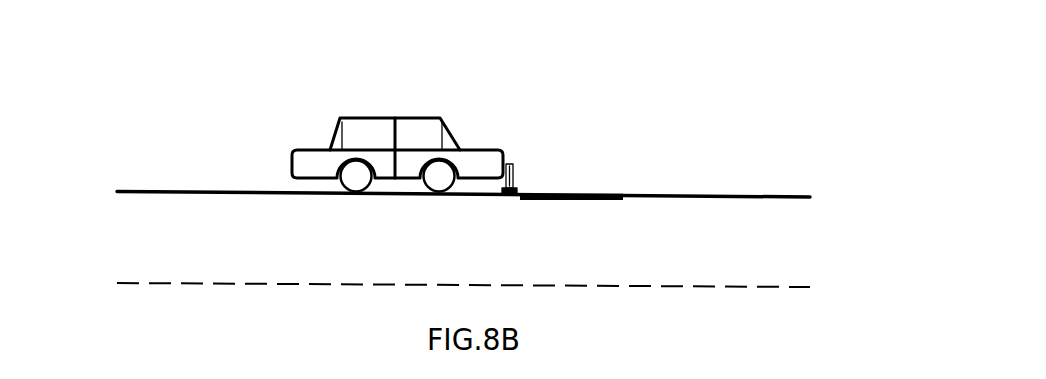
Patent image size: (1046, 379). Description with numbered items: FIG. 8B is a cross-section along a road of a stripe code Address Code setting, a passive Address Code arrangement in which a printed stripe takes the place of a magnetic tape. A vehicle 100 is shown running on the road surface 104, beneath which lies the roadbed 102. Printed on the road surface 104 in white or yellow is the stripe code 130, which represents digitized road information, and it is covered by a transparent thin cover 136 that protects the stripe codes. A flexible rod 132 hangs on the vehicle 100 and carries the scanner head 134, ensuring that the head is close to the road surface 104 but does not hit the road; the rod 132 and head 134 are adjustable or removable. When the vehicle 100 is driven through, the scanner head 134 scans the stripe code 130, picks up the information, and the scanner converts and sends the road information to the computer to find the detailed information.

The vehicle 100 is at (357, 130).
The roadbed 102 is at (198, 240).
The road surface 104 is at (277, 192).
The stripe code 130 is at (607, 193).
The flexible rod 132 is at (512, 165).
The scanner head 134 is at (587, 163).
The transparent thin cover 136 is at (573, 193).